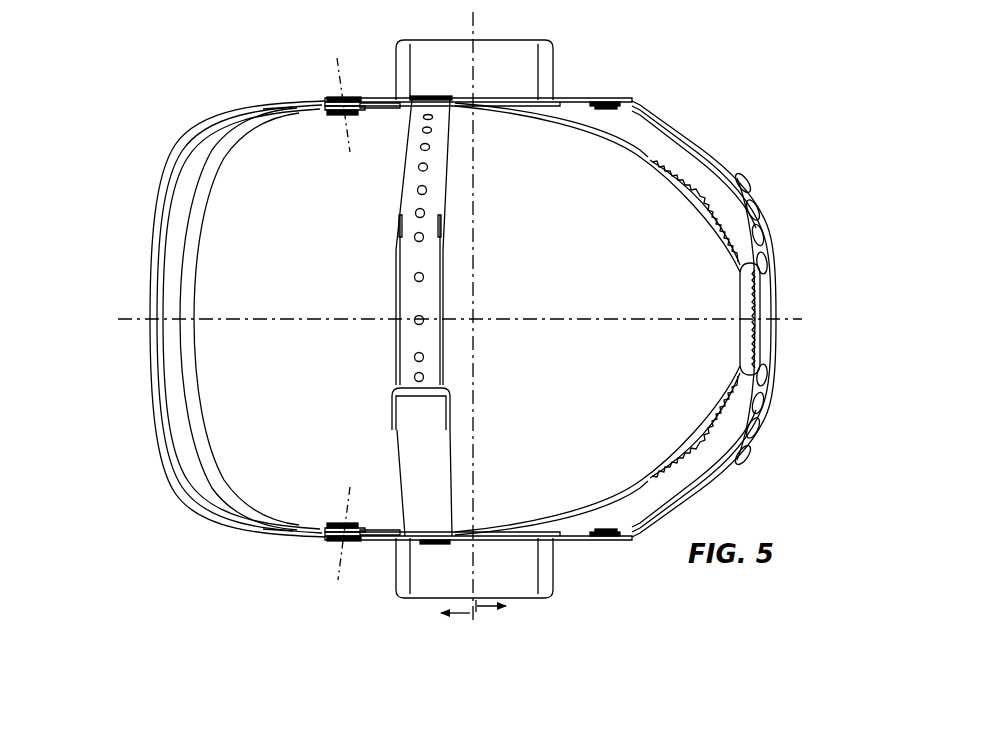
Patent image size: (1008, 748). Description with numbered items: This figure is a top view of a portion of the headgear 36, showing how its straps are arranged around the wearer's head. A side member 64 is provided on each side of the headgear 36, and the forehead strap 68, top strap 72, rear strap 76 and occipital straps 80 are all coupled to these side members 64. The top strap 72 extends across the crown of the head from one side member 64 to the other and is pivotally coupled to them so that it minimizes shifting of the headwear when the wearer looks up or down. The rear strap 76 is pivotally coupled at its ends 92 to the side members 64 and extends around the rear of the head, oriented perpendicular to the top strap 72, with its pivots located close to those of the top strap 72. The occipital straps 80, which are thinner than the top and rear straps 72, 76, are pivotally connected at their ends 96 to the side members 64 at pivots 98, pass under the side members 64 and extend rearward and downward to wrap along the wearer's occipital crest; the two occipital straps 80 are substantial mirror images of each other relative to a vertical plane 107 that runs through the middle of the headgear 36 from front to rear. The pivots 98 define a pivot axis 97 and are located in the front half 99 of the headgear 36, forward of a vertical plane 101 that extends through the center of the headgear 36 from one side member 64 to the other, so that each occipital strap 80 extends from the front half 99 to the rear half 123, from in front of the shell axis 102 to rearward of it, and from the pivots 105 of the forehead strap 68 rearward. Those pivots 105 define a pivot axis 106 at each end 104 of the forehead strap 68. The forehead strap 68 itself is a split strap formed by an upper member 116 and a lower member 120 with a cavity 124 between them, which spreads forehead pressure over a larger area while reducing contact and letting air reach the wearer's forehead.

The headgear 36 is at (773, 101).
The side member 64 is at (371, 94).
The forehead strap 68 is at (166, 196).
The top strap 72 is at (450, 200).
The rear strap 76 is at (751, 162).
The occipital strap 80 is at (638, 133).
The end of rear strap 92 is at (584, 108).
The end of occipital strap 96 is at (326, 120).
The pivot axis 97 is at (340, 80).
The pivot 98 is at (357, 120).
The front half 99 is at (465, 612).
The vertical plane 101 is at (476, 388).
The shell axis 102 is at (505, 299).
The end of forehead strap 104 is at (372, 113).
The pivot 105 is at (353, 95).
The pivot axis 106 is at (338, 574).
The vertical plane 107 is at (607, 318).
The upper member 116 is at (192, 240).
The lower member 120 is at (162, 415).
The rear half 123 is at (478, 602).
The cavity 124 is at (188, 430).